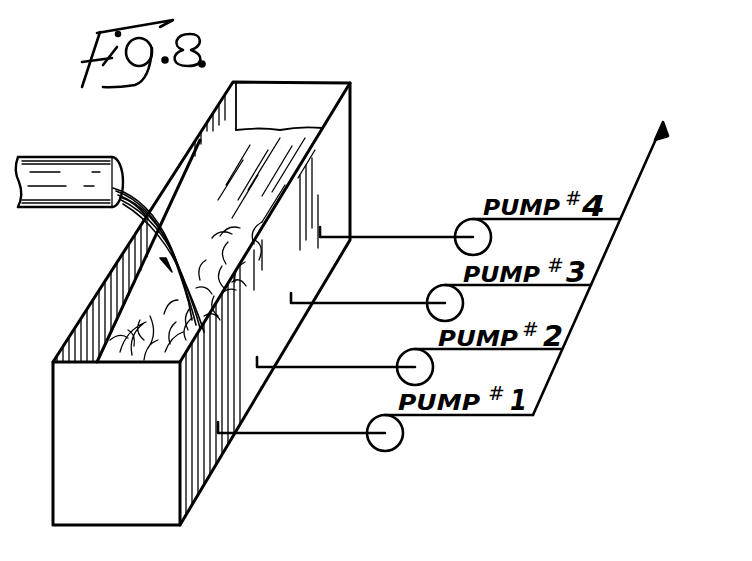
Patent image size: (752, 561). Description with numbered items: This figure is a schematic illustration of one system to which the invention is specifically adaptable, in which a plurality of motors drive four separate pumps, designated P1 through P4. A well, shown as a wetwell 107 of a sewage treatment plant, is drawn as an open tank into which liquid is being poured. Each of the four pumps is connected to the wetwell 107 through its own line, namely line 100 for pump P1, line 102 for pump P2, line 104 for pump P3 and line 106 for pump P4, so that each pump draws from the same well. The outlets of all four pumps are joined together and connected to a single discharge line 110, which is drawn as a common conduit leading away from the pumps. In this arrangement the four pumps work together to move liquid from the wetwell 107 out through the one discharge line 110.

The line 100 is at (270, 436).
The line 102 is at (305, 370).
The line 104 is at (332, 306).
The line 106 is at (363, 240).
The wetwell 107 is at (128, 496).
The discharge line 110 is at (650, 152).